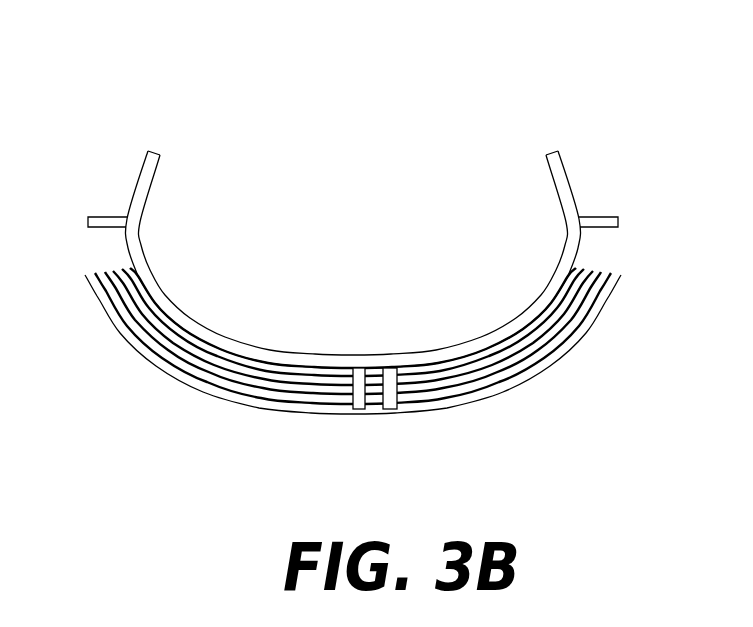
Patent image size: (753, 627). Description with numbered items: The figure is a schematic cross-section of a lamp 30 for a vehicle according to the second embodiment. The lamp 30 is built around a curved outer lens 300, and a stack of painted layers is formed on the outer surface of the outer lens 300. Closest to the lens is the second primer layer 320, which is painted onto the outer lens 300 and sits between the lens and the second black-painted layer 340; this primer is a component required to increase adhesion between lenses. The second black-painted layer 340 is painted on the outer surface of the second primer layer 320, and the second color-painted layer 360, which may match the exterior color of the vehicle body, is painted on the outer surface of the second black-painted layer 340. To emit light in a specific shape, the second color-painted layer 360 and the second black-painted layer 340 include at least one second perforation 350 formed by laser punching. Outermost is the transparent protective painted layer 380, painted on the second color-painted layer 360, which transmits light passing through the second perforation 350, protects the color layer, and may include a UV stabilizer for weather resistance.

The lamp for a vehicle 30 is at (125, 65).
The outer lens 300 is at (562, 182).
The second primer layer 320 is at (580, 268).
The second black-painted layer 340 is at (115, 268).
The second color-painted layer 360 is at (603, 270).
The protective painted layer 380 is at (493, 388).
The second perforation 350 is at (393, 407).